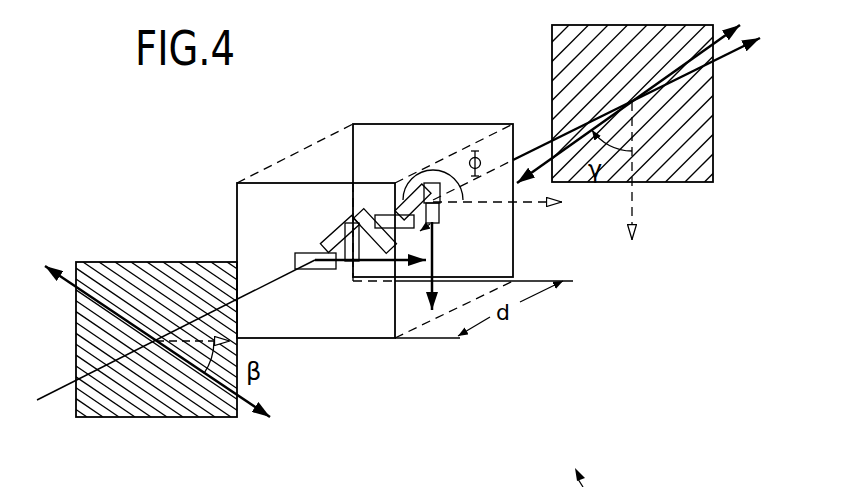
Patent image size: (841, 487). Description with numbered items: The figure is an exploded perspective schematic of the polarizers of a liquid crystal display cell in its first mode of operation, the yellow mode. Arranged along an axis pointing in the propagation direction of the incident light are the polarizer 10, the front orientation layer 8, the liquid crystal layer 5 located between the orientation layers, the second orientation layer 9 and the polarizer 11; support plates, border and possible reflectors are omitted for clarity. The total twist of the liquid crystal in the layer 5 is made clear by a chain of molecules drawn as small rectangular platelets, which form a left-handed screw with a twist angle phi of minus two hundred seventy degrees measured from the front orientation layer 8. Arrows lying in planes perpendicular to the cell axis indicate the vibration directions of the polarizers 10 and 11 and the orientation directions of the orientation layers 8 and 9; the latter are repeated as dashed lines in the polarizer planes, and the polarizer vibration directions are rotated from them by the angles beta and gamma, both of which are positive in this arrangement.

The liquid crystal layer 5 is at (318, 168).
The front orientation layer 8 is at (237, 212).
The orientation layer 9 is at (428, 124).
The polarizer 10 is at (162, 420).
The polarizer 11 is at (552, 45).